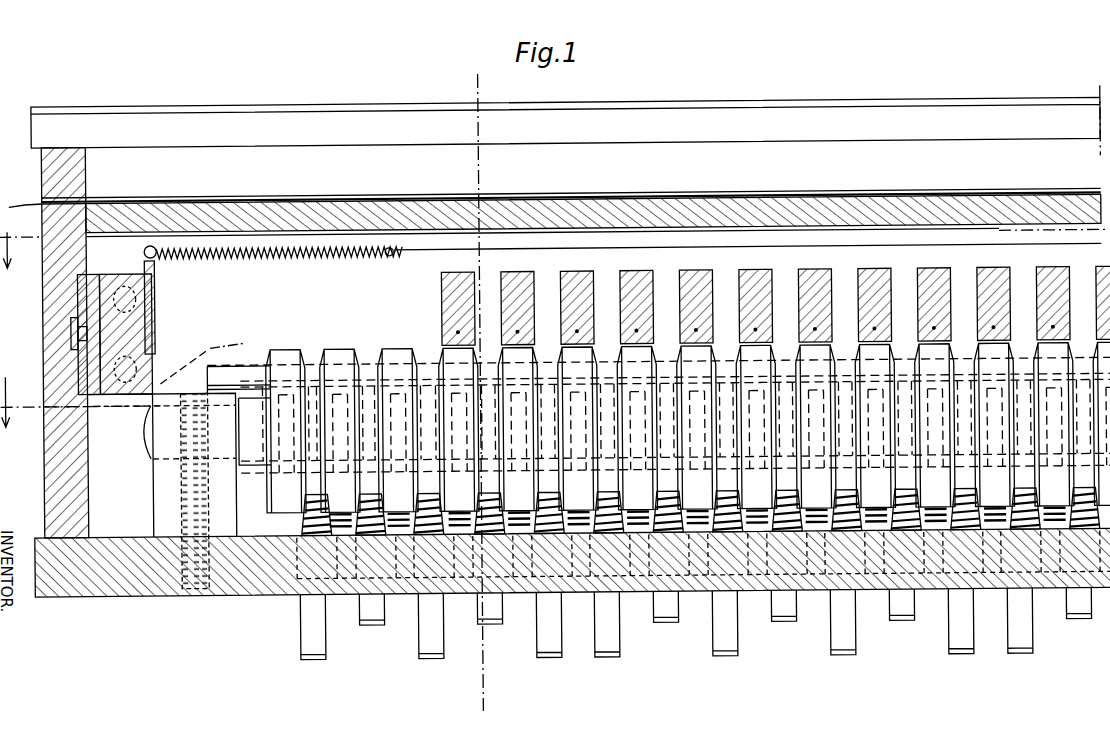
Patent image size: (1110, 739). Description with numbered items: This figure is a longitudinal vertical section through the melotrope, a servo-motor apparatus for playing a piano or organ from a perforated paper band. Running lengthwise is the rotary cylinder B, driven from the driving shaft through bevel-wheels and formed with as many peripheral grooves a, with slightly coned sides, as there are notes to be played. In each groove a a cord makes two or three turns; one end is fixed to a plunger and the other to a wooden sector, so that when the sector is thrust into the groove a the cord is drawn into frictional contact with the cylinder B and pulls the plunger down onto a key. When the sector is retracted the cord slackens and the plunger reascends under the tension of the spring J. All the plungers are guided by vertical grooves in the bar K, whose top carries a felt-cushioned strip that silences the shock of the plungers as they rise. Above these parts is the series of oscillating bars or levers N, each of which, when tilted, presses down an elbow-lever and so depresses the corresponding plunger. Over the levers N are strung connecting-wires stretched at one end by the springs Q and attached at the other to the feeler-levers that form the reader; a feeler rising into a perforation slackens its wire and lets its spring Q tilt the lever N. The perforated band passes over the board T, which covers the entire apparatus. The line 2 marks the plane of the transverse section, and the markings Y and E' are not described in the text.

The board T is at (559, 216).
The guide strip Y is at (571, 187).
The spring Q is at (273, 299).
The bar K is at (250, 369).
The oscillating bar N is at (775, 305).
The rotary cylinder B is at (669, 428).
The peripheral groove a is at (707, 427).
The spring J is at (688, 511).
The pins E' is at (696, 623).
The section line 2 is at (500, 62).